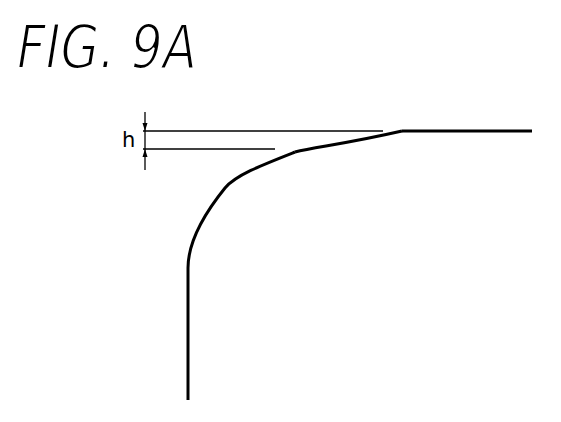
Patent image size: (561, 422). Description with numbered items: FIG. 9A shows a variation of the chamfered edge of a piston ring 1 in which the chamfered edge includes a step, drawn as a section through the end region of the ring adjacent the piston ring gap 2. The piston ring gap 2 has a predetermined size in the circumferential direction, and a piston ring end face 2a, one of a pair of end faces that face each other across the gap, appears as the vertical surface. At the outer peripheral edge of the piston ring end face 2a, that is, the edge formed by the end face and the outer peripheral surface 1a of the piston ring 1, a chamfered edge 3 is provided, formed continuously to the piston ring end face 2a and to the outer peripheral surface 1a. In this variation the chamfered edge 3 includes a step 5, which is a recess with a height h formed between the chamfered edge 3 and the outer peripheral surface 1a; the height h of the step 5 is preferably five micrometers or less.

The piston ring 1 is at (323, 233).
The outer peripheral surface 1a is at (447, 131).
The piston ring gap 2 is at (151, 334).
The piston ring end face 2a is at (188, 347).
The chamfered edge 3 is at (177, 192).
The step 5 is at (352, 142).